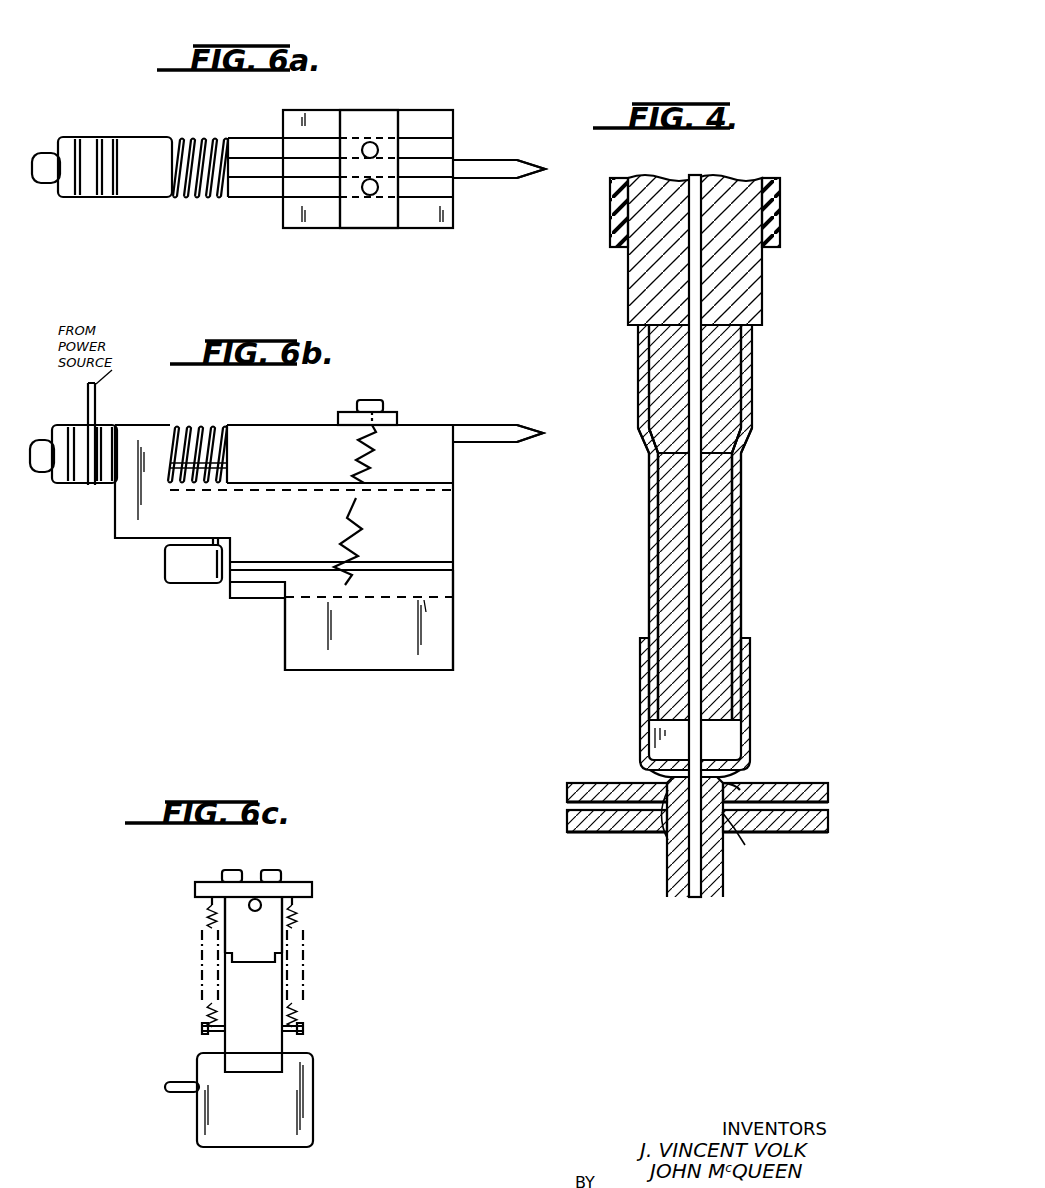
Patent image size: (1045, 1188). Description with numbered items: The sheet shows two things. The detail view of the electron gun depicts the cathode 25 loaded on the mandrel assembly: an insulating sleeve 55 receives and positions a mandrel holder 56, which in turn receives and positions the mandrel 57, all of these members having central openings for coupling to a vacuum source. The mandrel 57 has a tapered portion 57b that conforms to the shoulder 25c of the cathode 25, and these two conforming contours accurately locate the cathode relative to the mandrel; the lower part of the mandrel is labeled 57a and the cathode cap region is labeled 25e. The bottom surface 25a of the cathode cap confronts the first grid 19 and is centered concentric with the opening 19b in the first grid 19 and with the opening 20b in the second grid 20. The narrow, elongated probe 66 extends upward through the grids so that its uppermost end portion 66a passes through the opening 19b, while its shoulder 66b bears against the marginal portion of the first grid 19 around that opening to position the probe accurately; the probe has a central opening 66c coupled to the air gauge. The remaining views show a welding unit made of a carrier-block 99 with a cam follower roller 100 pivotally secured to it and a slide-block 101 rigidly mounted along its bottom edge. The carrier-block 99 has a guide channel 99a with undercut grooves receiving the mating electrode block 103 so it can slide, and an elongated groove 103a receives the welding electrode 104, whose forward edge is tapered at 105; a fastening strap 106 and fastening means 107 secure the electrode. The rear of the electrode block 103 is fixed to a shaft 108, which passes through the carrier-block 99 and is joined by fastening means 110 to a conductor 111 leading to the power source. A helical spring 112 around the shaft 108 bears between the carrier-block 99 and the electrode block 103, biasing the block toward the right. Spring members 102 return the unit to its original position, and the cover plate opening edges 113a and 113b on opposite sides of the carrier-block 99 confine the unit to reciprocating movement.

In FIG. 6a, the electrode block 103 is at (312, 220).
In FIG. 6b, the electrode block 103 is at (323, 465).
In FIG. 6c, the electrode block 103 is at (272, 947).
In FIG. 6a, the fastening strap 106 is at (377, 115).
In FIG. 6b, the fastening strap 106 is at (395, 418).
In FIG. 6c, the fastening strap 106 is at (305, 885).
In FIG. 6a, the fastening means 107 is at (378, 182).
In FIG. 6b, the fastening means 107 is at (374, 402).
In FIG. 6c, the fastening means 107 is at (270, 870).
In FIG. 6a, the welding electrode 104 is at (470, 160).
In FIG. 6b, the welding electrode 104 is at (475, 425).
In FIG. 6a, the tapered forward edge 105 is at (515, 183).
In FIG. 6b, the tapered forward edge 105 is at (523, 443).
In FIG. 6b, the carrier-block 99 is at (292, 529).
In FIG. 6c, the carrier-block 99 is at (272, 1034).
In FIG. 6b, the slide-block 101 is at (387, 648).
In FIG. 6c, the slide-block 101 is at (276, 1117).
In FIG. 6b, the cam follower roller 100 is at (165, 562).
In FIG. 6b, the spring members 102 is at (357, 530).
In FIG. 6c, the spring members 102 is at (335, 1003).
In FIG. 6b, the shaft 108 is at (173, 425).
In FIG. 6b, the fastening means 110 is at (95, 488).
In FIG. 6b, the conductor 111 is at (88, 396).
In FIG. 6b, the helical spring 112 is at (202, 425).
In FIG. 6c, the guide channel 99a is at (263, 965).
In FIG. 6c, the elongated groove 103a is at (261, 911).
In FIG. 6c, the opening edge 113a is at (202, 1030).
In FIG. 6c, the opening edge 113b is at (303, 1032).
In FIG. 4, the insulating sleeve 55 is at (782, 228).
In FIG. 4, the mandrel holder 56 is at (752, 303).
In FIG. 4, the mandrel 57 is at (727, 388).
In FIG. 4, the lower core 57a is at (697, 520).
In FIG. 4, the tapered portion of mandrel 57b is at (747, 449).
In FIG. 4, the shoulder 25c is at (645, 445).
In FIG. 4, the cathode 25 is at (745, 565).
In FIG. 4, the sleeve 25e is at (740, 707).
In FIG. 4, the bottom surface of cathode cap 25a is at (733, 772).
In FIG. 4, the opening in first grid 19b is at (727, 778).
In FIG. 4, the uppermost end portion of probe 66a is at (670, 778).
In FIG. 4, the first grid 19 is at (567, 790).
In FIG. 4, the second grid 20 is at (567, 817).
In FIG. 4, the shoulder of probe 66b is at (670, 830).
In FIG. 4, the probe 66 is at (665, 866).
In FIG. 4, the opening in second grid 20b is at (723, 820).
In FIG. 4, the central opening of probe 66c is at (693, 865).